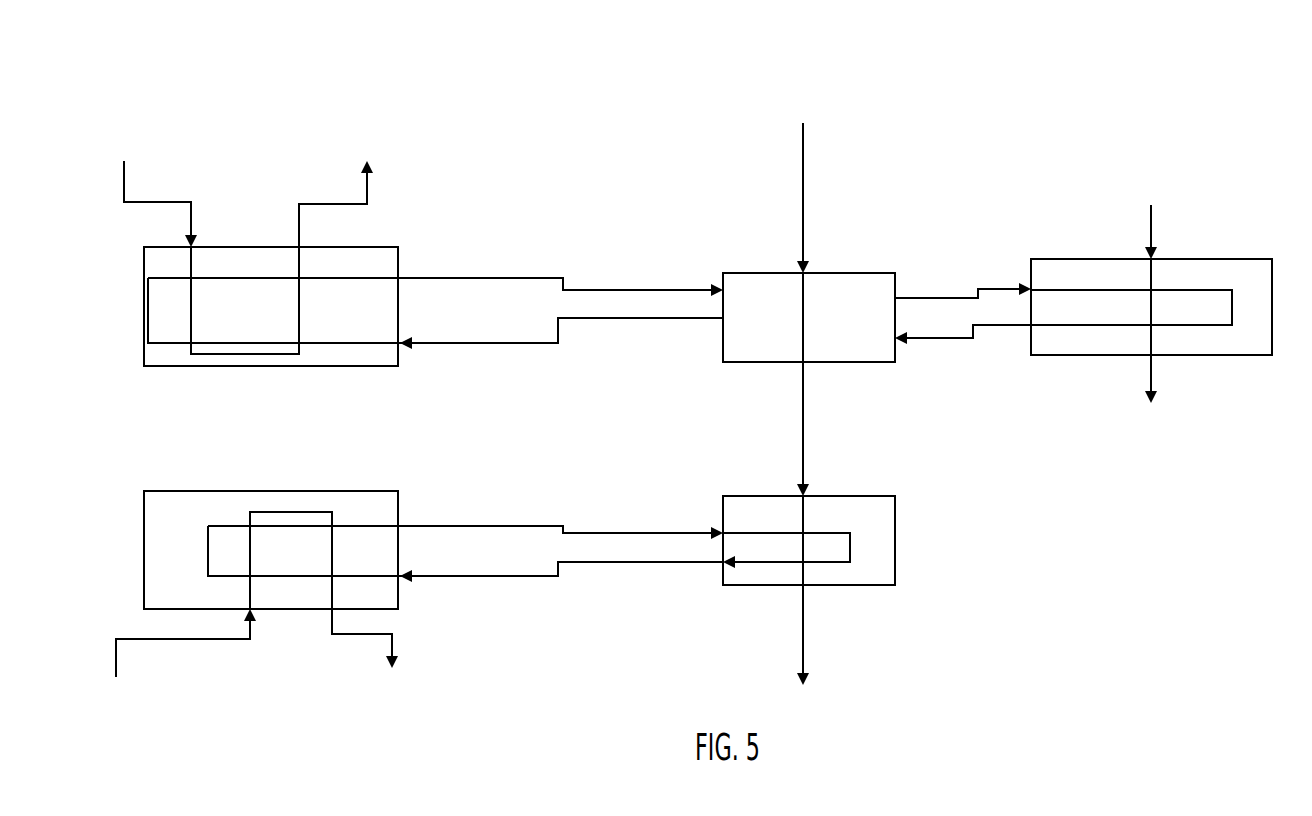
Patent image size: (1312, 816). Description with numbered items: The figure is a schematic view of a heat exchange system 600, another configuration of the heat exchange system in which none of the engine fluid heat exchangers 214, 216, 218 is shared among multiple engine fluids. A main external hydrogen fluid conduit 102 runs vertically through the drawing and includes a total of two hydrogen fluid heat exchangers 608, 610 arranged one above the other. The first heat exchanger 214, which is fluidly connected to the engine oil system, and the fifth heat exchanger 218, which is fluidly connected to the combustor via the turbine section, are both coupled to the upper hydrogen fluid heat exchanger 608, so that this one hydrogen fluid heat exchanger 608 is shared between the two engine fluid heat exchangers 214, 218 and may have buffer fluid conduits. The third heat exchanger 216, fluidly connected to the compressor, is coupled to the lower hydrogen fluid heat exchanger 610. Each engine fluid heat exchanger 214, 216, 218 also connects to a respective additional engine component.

The heat exchange system 600 is at (968, 72).
The main external hydrogen fluid conduit 102 is at (803, 199).
The first heat exchanger 214 is at (378, 247).
The third heat exchanger 216 is at (378, 491).
The fifth heat exchanger 218 is at (1220, 259).
The hydrogen fluid heat exchanger 608 is at (867, 273).
The hydrogen fluid heat exchanger 610 is at (867, 496).